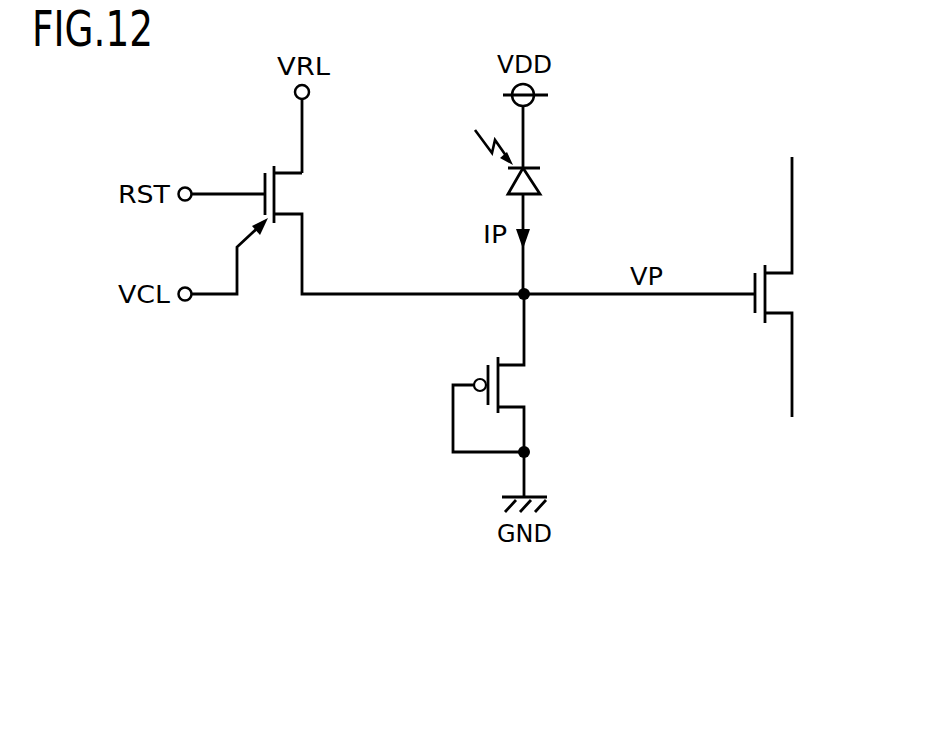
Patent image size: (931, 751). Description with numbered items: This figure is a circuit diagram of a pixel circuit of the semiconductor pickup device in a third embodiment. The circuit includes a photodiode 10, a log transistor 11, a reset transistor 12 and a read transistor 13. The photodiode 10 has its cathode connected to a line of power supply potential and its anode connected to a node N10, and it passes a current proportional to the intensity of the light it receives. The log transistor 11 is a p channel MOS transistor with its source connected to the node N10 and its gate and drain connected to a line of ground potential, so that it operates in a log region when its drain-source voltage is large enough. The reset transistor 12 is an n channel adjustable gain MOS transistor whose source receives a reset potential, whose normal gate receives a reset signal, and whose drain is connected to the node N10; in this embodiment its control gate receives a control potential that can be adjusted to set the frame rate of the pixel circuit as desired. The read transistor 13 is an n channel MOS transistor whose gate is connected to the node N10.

The photodiode 10 is at (538, 183).
The log transistor 11 is at (512, 362).
The reset transistor 12 is at (292, 168).
The read transistor 13 is at (782, 268).
The node N10 is at (527, 299).